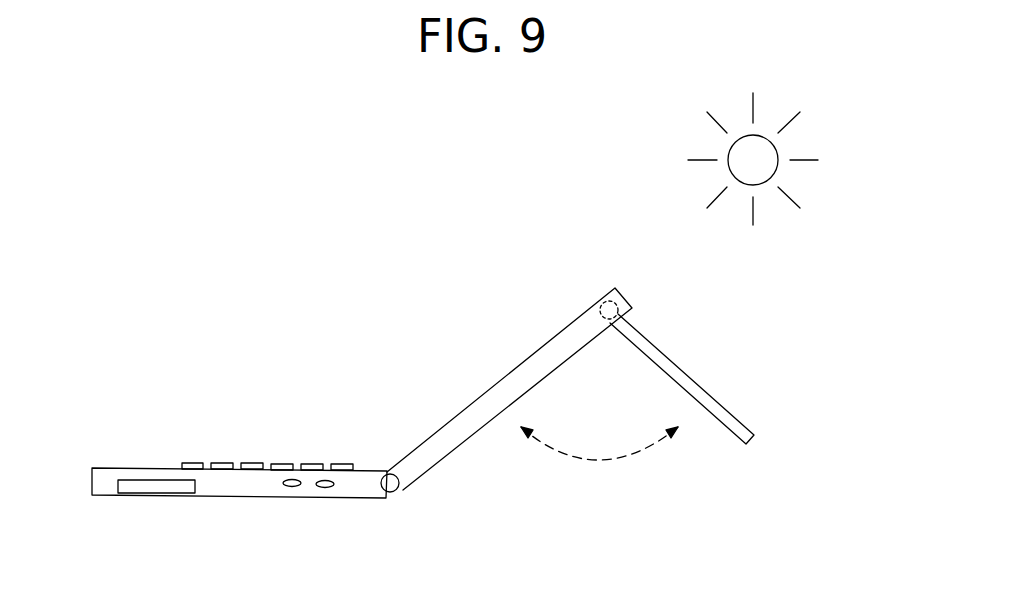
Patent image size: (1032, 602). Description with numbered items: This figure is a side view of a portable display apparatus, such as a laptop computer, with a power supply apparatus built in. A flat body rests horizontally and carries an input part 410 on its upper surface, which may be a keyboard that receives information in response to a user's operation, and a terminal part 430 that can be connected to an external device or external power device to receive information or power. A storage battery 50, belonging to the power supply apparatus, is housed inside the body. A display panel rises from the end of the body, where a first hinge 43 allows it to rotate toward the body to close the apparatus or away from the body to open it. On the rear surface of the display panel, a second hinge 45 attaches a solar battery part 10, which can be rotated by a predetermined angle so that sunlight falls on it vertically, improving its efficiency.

The solar battery part 10 is at (688, 380).
The first hinge 43 is at (393, 492).
The second hinge 45 is at (610, 301).
The storage battery 50 is at (159, 488).
The input part 410 is at (193, 462).
The terminal part 430 is at (292, 488).